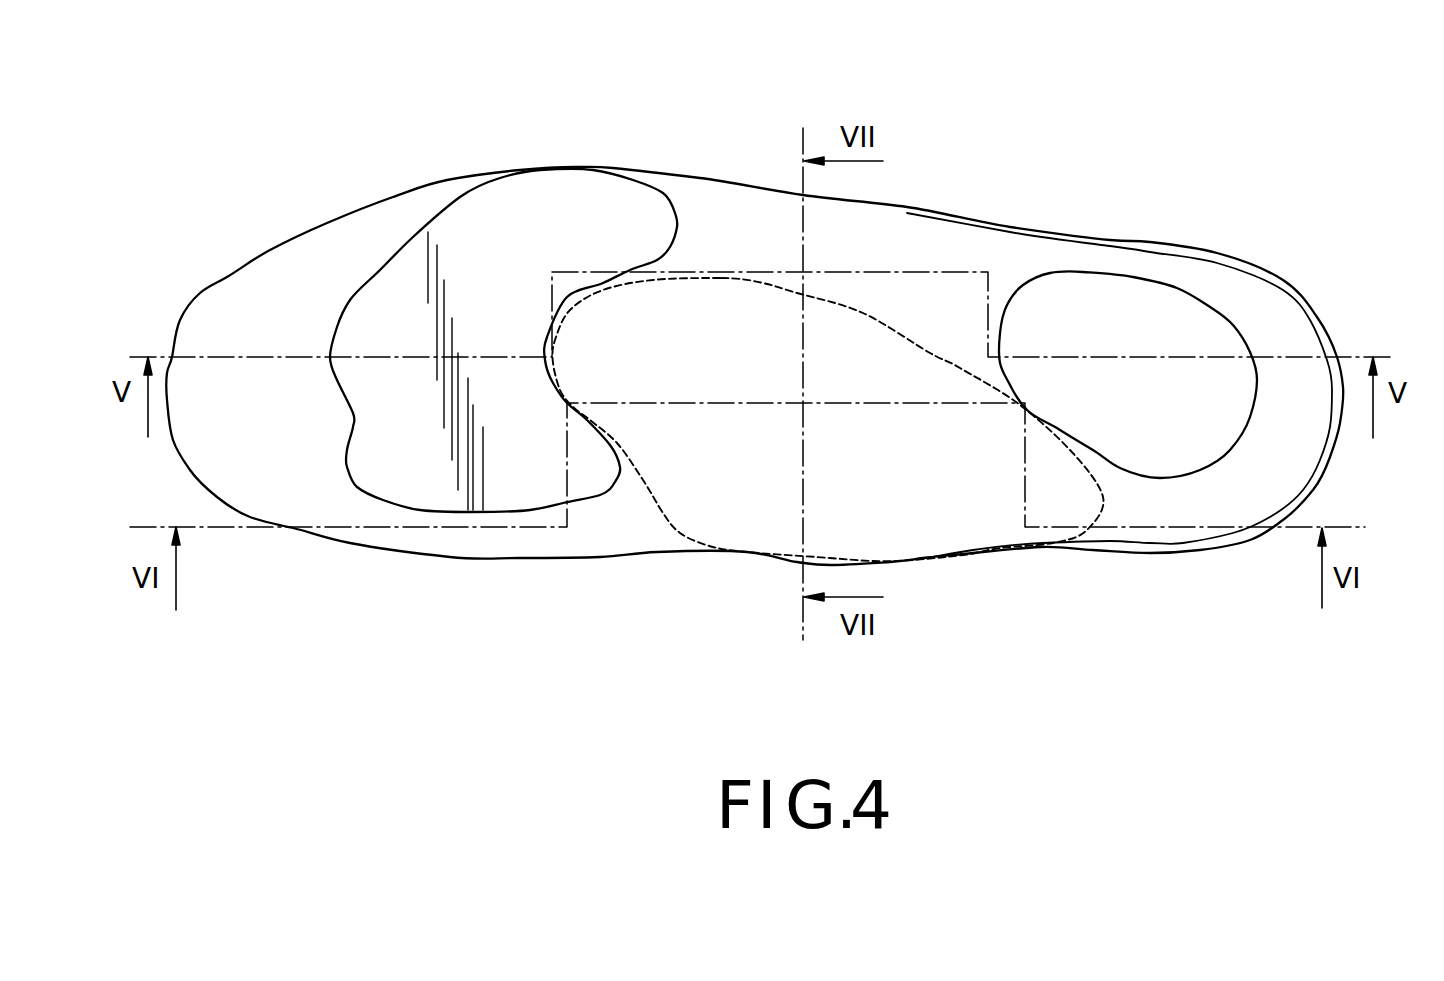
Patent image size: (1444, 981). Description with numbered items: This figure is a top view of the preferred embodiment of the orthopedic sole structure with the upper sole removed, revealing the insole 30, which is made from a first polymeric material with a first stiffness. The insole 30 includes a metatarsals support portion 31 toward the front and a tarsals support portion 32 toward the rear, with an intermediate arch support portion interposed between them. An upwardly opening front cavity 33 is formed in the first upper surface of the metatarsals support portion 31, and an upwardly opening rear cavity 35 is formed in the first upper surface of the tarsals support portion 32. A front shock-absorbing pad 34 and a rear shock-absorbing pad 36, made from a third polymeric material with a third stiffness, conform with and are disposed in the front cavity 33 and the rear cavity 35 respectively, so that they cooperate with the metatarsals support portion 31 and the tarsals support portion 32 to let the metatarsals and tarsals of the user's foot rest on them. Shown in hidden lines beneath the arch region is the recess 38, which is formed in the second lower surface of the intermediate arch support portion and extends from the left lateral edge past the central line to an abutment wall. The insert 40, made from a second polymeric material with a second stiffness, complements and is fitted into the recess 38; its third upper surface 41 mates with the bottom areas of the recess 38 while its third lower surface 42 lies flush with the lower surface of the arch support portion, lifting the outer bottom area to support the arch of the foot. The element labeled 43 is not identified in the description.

The insole 30 is at (345, 178).
The metatarsals support portion 31 is at (230, 292).
The tarsals support portion 32 is at (1273, 310).
The front cavity 33 is at (503, 294).
The front shock-absorbing pad 34 is at (492, 205).
The rear cavity 35 is at (1123, 297).
The rear shock-absorbing pad 36 is at (1057, 287).
The recess 38 is at (827, 461).
The insert 40 is at (672, 537).
The third upper surface 41 is at (957, 420).
The third lower surface 42 is at (790, 317).
The side portion of reinforcing plate 43 is at (893, 562).